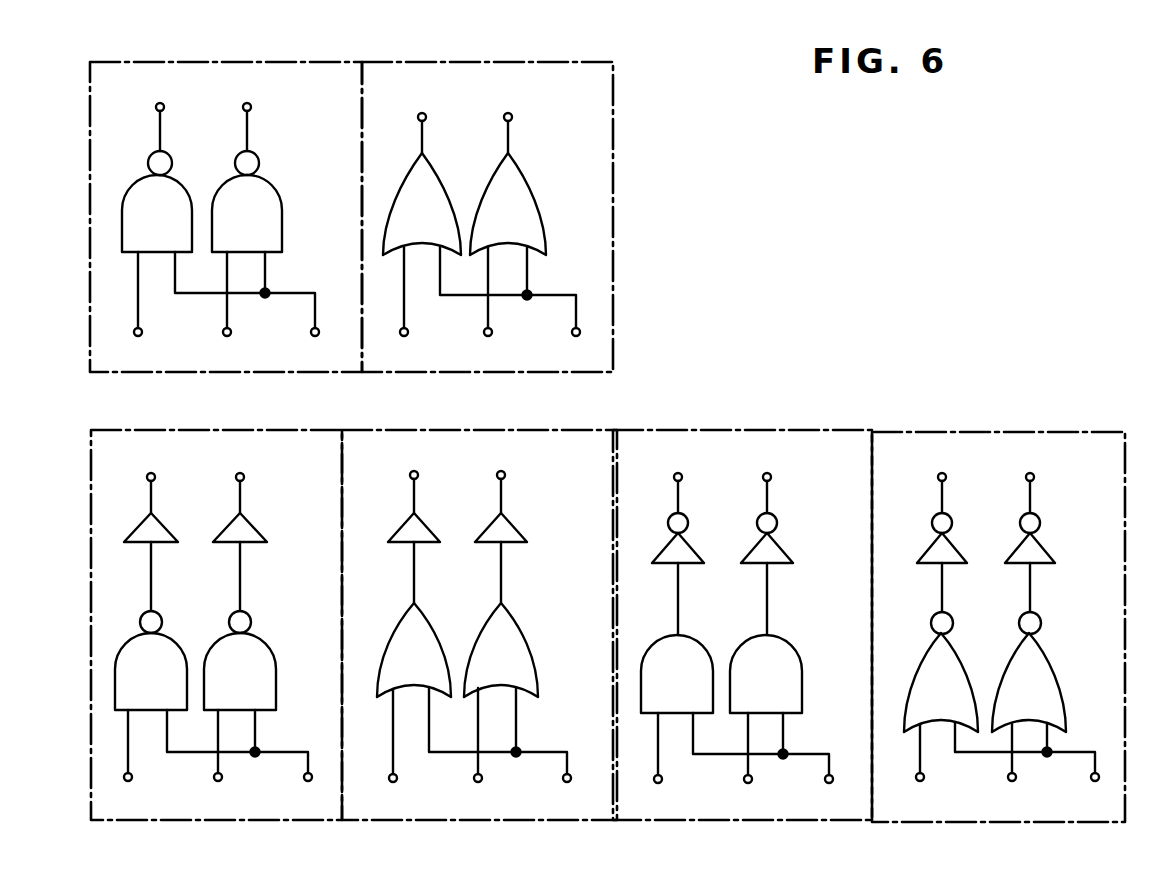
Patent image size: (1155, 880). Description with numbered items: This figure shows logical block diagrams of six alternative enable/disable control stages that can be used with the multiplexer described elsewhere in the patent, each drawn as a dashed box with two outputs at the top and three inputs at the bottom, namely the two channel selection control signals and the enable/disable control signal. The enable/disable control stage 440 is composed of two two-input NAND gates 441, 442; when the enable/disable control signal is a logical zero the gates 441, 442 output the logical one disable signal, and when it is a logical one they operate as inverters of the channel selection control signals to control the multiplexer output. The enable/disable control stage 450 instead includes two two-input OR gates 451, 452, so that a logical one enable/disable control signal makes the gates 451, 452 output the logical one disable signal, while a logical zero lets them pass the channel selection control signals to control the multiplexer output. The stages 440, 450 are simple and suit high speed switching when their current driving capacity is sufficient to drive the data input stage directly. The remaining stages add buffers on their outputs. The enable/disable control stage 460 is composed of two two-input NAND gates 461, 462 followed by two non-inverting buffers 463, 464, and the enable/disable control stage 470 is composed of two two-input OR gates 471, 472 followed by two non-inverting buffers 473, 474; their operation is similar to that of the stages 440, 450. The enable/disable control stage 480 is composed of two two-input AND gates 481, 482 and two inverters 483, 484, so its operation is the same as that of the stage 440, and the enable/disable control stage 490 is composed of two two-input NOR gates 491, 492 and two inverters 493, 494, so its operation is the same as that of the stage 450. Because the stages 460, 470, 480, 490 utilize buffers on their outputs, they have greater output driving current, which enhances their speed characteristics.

The enable/disable control stage 440 is at (277, 62).
The two-input NAND gate 441 is at (157, 201).
The two-input NAND gate 442 is at (247, 201).
The enable/disable control stage 450 is at (543, 62).
The two-input OR gate 451 is at (422, 204).
The two-input OR gate 452 is at (508, 204).
The enable/disable control stage 460 is at (217, 430).
The two-input NAND gate 461 is at (151, 660).
The two-input NAND gate 462 is at (240, 660).
The non-inverting buffer 463 is at (166, 529).
The non-inverting buffer 464 is at (255, 529).
The enable/disable control stage 470 is at (521, 430).
The two-input OR gate 471 is at (414, 650).
The two-input OR gate 472 is at (501, 650).
The non-inverting buffer 473 is at (428, 527).
The non-inverting buffer 474 is at (515, 527).
The enable/disable control stage 480 is at (718, 430).
The two-input AND gate 481 is at (677, 674).
The two-input AND gate 482 is at (766, 674).
The inverter 483 is at (694, 545).
The inverter 484 is at (783, 545).
The enable/disable control stage 490 is at (1002, 432).
The two-input NOR gate 491 is at (941, 672).
The two-input NOR gate 492 is at (1029, 672).
The inverter 493 is at (958, 545).
The inverter 494 is at (1046, 545).